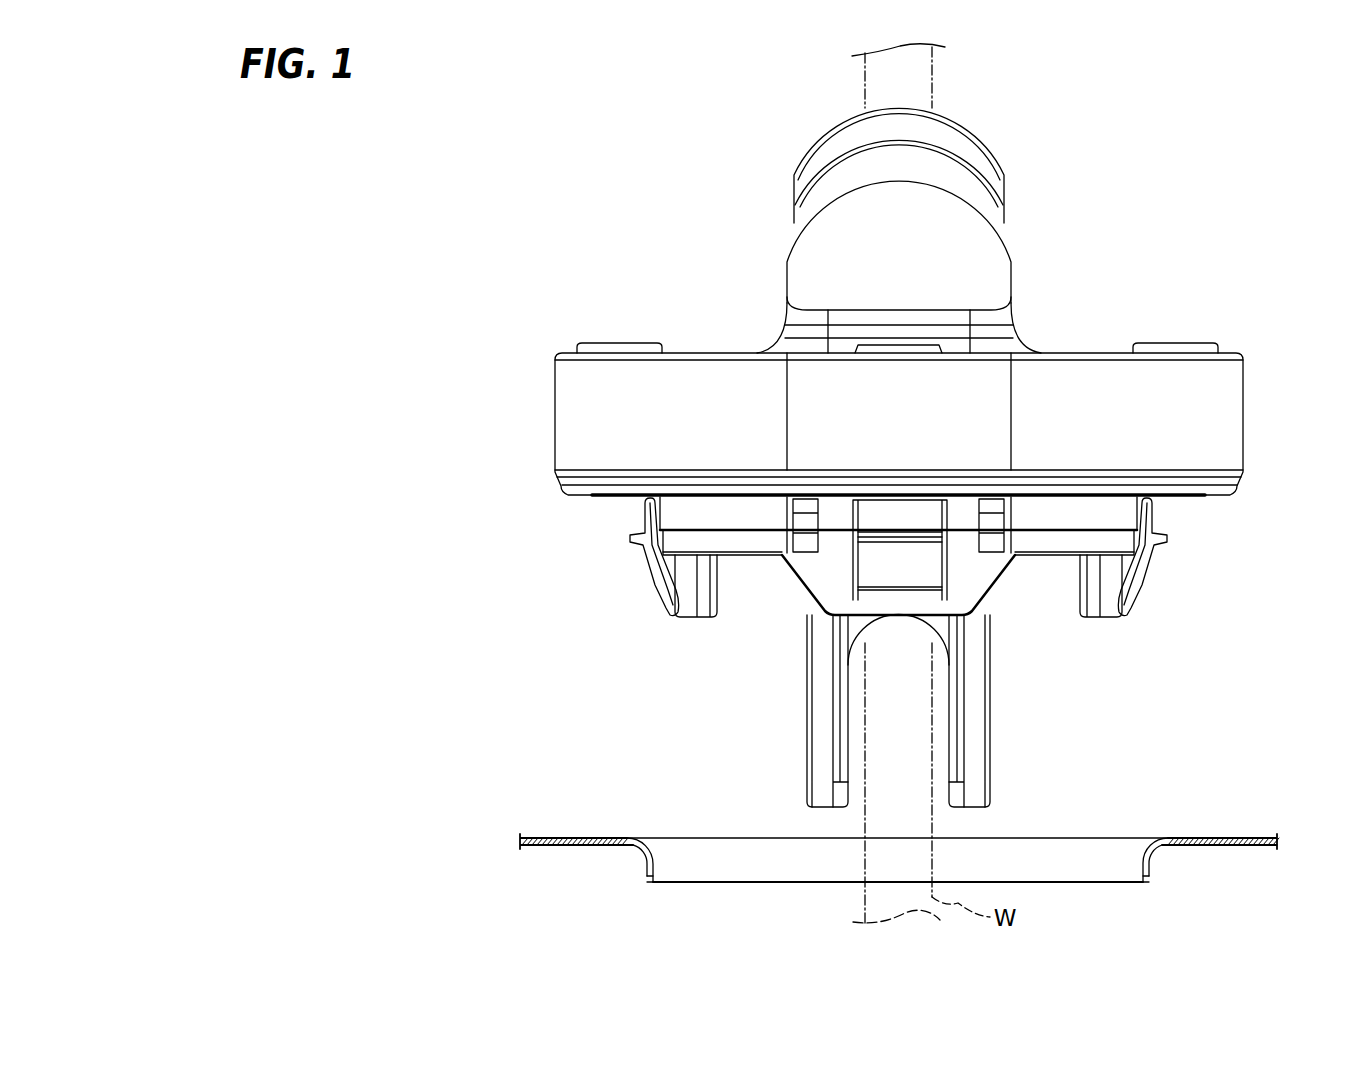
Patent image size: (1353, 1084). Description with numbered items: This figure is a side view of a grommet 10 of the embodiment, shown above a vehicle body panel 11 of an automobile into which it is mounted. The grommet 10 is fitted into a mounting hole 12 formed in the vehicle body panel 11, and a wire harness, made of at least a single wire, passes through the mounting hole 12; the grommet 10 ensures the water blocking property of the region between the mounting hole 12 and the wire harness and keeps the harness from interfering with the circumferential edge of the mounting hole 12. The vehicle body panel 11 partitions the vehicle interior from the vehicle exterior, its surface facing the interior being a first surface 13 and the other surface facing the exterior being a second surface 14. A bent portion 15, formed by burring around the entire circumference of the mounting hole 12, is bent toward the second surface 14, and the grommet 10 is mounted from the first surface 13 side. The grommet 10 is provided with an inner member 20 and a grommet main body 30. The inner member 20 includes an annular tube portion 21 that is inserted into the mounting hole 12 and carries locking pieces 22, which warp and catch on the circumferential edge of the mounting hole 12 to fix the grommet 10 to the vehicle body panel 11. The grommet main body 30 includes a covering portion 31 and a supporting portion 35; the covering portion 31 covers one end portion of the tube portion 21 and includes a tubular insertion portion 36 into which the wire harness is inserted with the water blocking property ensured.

The grommet 10 is at (1170, 212).
The vehicle body panel 11 is at (1253, 836).
The mounting hole 12 is at (1131, 882).
The first surface 13 is at (1218, 838).
The second surface 14 is at (1236, 846).
The bent portion 15 is at (1144, 838).
The inner member 20 is at (1043, 553).
The tube portion 21 is at (745, 542).
The locking pieces 22 is at (633, 555).
The grommet main body 30 is at (1243, 407).
The covering portion 31 is at (700, 353).
The supporting portion 35 is at (557, 477).
The insertion portion 36 is at (990, 246).